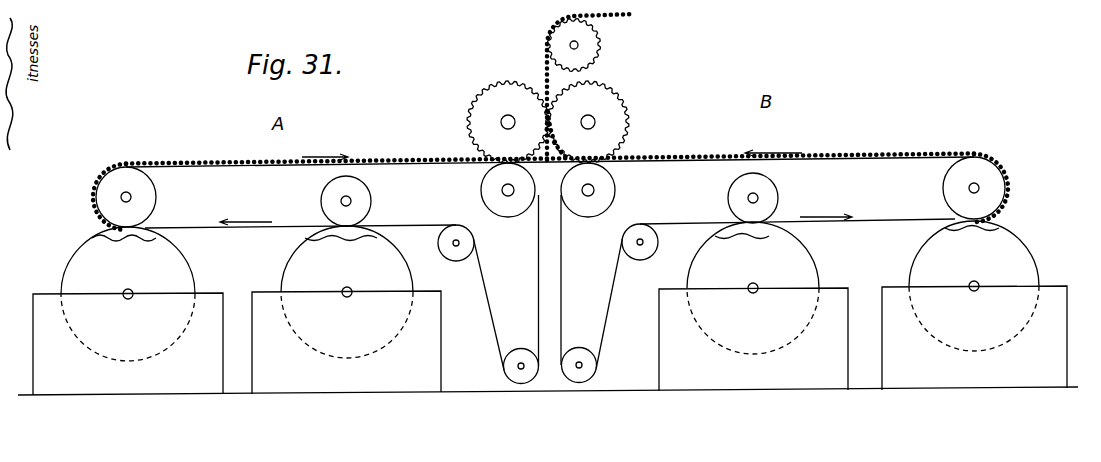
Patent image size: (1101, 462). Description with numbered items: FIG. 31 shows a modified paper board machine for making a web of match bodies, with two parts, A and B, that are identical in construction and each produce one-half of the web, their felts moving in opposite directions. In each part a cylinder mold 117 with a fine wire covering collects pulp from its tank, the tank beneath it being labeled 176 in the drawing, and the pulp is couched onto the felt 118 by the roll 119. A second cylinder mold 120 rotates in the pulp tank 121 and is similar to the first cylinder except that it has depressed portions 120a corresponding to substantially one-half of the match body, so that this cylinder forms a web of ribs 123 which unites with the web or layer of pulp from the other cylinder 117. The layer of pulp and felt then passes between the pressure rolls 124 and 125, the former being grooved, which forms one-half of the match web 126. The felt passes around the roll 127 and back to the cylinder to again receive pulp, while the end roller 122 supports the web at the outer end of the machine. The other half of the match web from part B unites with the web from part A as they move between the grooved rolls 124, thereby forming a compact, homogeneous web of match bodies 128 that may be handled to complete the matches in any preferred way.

The cylinder mold 117 is at (393, 256).
The felt 118 is at (402, 230).
The roll 119 is at (367, 193).
The second cylinder mold 120 is at (185, 266).
The depressed portions 120a is at (1012, 222).
The pulp tank 121 is at (123, 388).
The end roller 122 is at (151, 207).
The web of ribs 123 is at (228, 163).
The pressure roll 124 is at (472, 103).
The pressure roll 125 is at (482, 186).
The match web 126 is at (586, 94).
The roll 127 is at (503, 366).
The web of match bodies 128 is at (636, 15).
The support / frame 176 is at (396, 387).